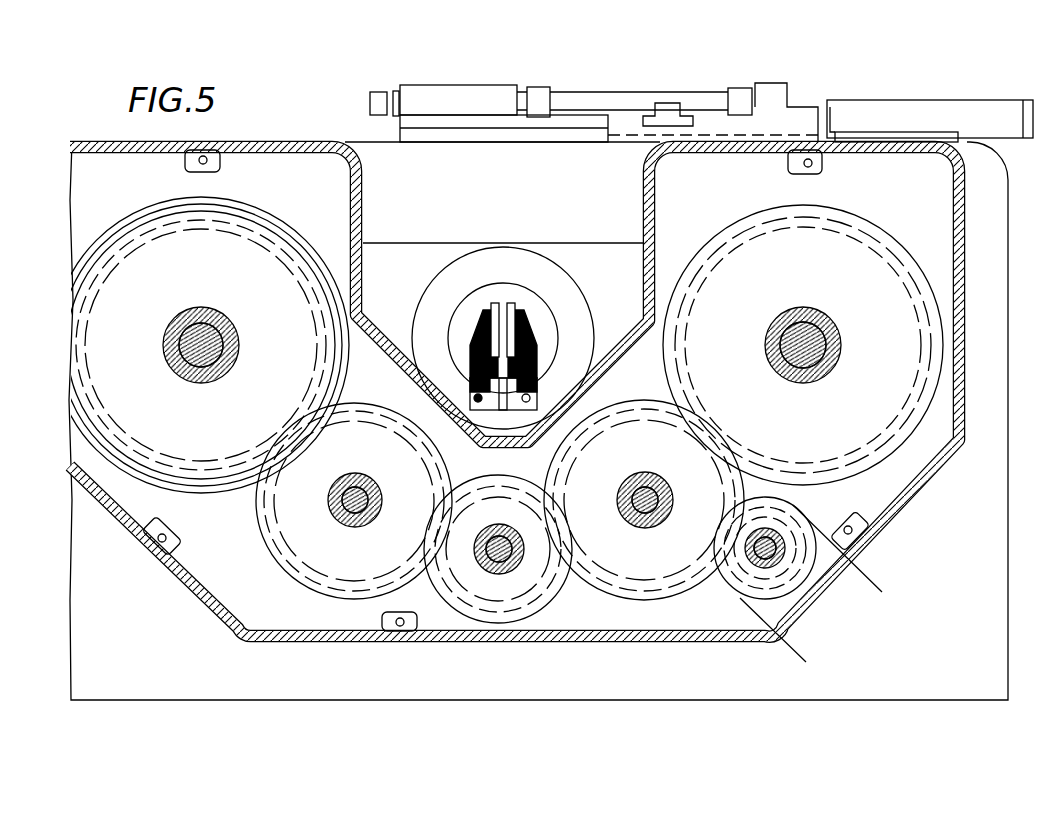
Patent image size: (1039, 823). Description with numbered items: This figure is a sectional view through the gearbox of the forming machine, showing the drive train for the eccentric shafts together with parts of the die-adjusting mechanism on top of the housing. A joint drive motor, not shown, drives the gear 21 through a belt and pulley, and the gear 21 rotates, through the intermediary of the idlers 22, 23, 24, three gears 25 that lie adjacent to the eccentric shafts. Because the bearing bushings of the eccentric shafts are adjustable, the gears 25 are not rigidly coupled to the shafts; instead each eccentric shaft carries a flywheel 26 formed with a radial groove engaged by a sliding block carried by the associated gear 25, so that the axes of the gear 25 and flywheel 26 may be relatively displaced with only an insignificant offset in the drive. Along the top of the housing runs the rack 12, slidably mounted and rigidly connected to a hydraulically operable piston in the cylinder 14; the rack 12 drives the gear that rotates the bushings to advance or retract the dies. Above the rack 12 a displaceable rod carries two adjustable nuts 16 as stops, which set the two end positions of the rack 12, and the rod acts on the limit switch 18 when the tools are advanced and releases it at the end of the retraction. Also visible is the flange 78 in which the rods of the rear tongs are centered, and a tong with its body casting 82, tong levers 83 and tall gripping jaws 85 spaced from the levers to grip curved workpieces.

The rack 12 is at (807, 122).
The cylinder 14 is at (932, 113).
The nuts 16 is at (741, 103).
The limit switch 18 is at (385, 104).
The gear 21 is at (800, 512).
The idler 22 is at (672, 578).
The idler 23 is at (488, 615).
The idler 24 is at (292, 557).
The gear 25 is at (866, 229).
The flywheel 26 is at (288, 231).
The flange 78 is at (583, 318).
The body casting 82 is at (531, 390).
The tong levers 83 is at (473, 368).
The gripping jaws 85 is at (508, 302).